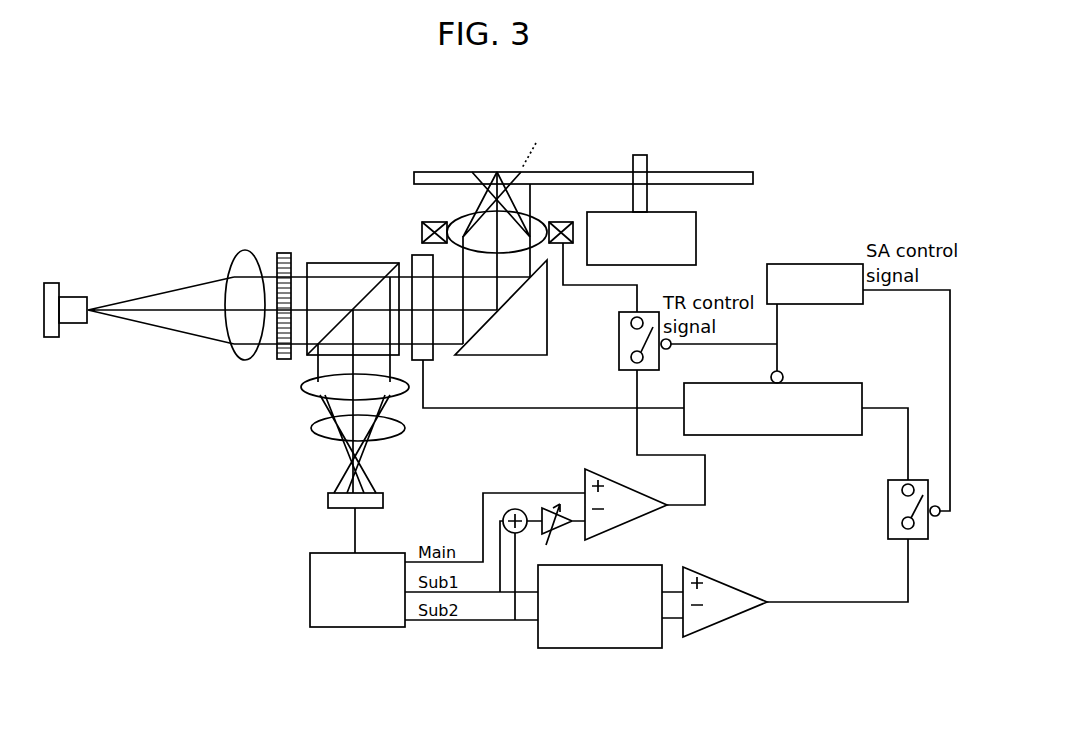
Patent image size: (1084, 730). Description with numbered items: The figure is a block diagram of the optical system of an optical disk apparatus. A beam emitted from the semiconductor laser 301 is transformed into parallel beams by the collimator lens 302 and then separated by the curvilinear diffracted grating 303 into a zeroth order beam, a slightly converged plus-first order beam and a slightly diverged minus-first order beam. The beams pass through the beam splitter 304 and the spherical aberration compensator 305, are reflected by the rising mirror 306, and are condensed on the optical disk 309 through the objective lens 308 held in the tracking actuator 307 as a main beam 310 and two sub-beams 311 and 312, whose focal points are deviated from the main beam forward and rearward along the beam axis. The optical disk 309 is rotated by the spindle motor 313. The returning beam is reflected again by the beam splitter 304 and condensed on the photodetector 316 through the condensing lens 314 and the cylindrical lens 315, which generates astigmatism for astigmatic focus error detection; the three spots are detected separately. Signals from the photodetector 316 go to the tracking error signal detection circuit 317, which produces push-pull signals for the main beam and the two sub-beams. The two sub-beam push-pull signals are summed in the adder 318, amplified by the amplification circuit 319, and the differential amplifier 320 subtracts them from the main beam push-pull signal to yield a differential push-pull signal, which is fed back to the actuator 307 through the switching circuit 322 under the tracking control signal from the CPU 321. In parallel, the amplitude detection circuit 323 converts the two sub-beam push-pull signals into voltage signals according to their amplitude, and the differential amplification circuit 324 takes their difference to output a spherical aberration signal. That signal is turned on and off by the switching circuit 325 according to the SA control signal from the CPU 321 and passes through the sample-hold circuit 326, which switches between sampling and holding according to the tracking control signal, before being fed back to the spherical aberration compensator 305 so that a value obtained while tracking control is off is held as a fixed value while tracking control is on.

The semiconductor laser 301 is at (68, 307).
The collimator lens 302 is at (231, 267).
The curvilinear diffracted grating 303 is at (278, 256).
The beam splitter 304 is at (356, 263).
The spherical aberration compensator 305 is at (410, 262).
The rising mirror 306 is at (510, 365).
The tracking actuator 307 is at (562, 222).
The objective lens 308 is at (456, 220).
The optical disk 309 is at (683, 172).
The main beam 310 is at (496, 172).
The sub-beam 311 is at (476, 216).
The sub-beam 312 is at (536, 143).
The spindle motor 313 is at (696, 232).
The condensing lens 314 is at (302, 384).
The cylindrical lens 315 is at (312, 428).
The photodetector 316 is at (328, 501).
The tracking error signal detection circuit 317 is at (312, 627).
The adder 318 is at (508, 512).
The amplification circuit 319 is at (543, 509).
The differential amplifier 320 is at (645, 516).
The CPU 321 is at (792, 265).
The switching circuit 322 is at (649, 311).
The amplitude detection circuit 323 is at (542, 647).
The differential amplification circuit 324 is at (700, 633).
The switching circuit 325 is at (887, 520).
The sample-hold circuit 326 is at (826, 383).